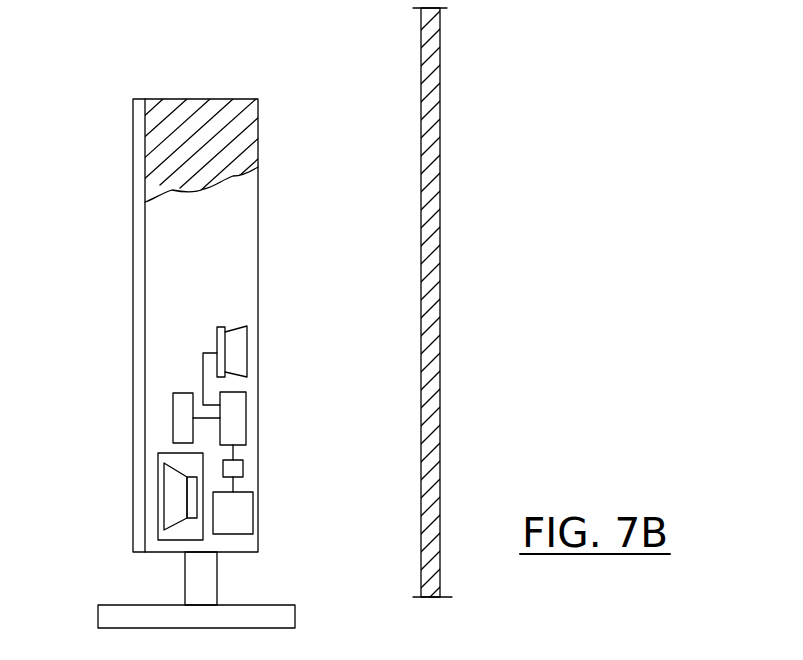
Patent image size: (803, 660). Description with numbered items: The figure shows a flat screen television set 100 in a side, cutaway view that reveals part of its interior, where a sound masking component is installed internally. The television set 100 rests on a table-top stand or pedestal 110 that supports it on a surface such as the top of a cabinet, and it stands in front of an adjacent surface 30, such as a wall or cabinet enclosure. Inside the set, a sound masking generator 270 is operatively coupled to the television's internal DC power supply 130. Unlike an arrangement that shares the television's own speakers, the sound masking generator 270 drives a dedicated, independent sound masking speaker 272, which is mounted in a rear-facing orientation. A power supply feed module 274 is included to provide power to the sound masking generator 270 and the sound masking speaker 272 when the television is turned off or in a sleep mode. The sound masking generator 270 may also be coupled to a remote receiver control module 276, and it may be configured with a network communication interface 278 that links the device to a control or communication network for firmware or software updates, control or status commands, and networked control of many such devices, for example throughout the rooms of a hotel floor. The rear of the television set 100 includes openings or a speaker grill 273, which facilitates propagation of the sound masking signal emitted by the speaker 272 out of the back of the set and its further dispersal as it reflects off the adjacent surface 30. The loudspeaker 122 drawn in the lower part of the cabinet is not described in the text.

The television set 100 is at (221, 88).
The adjacent surface 30 is at (440, 78).
The pedestal 110 is at (278, 605).
The loudspeaker 122 is at (172, 540).
The internal DC power supply 130 is at (253, 516).
The sound masking generator 270 is at (247, 422).
The sound masking speaker 272 is at (237, 327).
The speaker grill 273 is at (370, 321).
The power supply feed module 274 is at (243, 468).
The remote receiver control module 276 is at (97, 325).
The network communication interface 278 is at (185, 393).